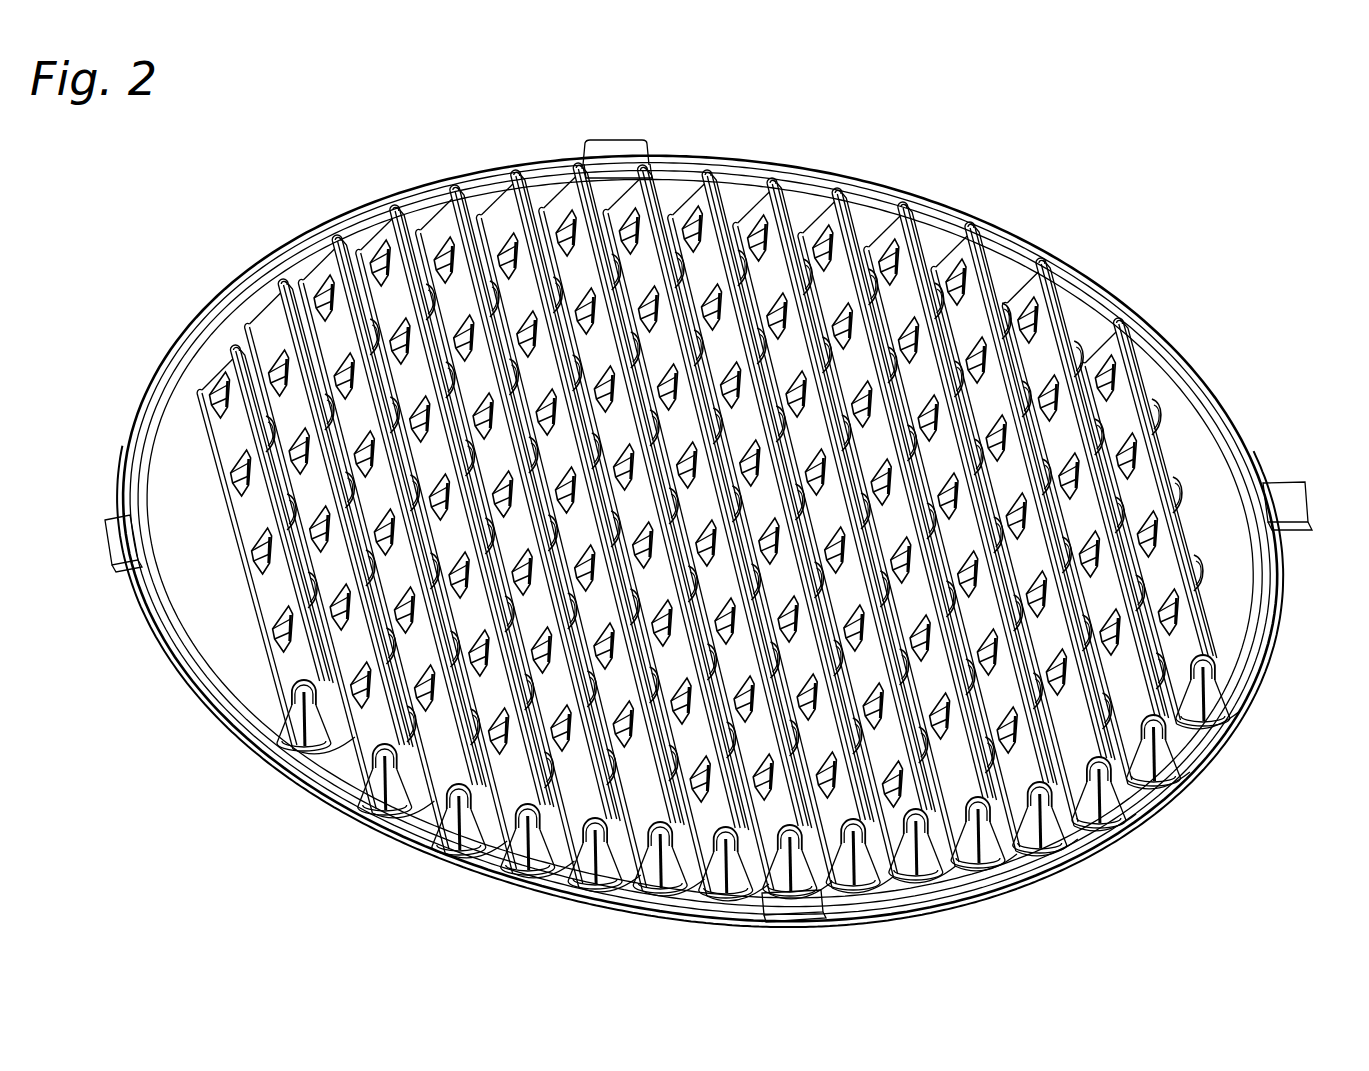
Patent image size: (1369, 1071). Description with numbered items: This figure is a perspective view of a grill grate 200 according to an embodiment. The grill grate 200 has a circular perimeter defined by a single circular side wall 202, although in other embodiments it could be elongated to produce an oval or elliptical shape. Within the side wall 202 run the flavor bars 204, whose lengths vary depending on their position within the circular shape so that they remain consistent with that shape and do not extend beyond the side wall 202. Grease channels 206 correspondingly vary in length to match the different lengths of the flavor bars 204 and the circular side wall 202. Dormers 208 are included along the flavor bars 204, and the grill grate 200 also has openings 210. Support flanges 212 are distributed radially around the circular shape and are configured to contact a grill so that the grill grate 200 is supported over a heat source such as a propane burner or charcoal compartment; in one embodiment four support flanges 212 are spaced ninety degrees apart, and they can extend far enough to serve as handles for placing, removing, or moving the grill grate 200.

The grill grate 200 is at (1130, 199).
The side wall 202 is at (215, 304).
The flavor bars 204 is at (510, 176).
The grease channels 206 is at (503, 800).
The dormers 208 is at (772, 283).
The openings 210 is at (858, 883).
The support flanges 212 is at (623, 150).